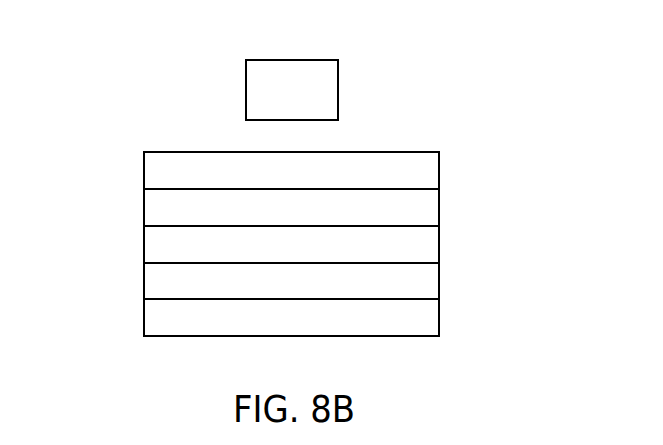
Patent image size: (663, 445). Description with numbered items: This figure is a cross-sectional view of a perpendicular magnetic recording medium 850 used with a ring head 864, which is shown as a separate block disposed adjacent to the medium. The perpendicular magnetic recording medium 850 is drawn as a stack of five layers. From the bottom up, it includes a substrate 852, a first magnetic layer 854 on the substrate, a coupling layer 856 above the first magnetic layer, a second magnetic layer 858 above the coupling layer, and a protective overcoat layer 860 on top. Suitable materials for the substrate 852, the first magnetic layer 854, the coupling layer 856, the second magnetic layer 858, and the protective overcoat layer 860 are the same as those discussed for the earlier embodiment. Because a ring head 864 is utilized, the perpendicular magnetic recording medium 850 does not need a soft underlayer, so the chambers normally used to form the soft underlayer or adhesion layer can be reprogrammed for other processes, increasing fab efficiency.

The perpendicular magnetic recording medium 850 is at (141, 96).
The ring head 864 is at (311, 101).
The protective overcoat layer 860 is at (311, 183).
The second magnetic layer 858 is at (311, 220).
The coupling layer 856 is at (311, 257).
The first magnetic layer 854 is at (311, 293).
The substrate 852 is at (311, 330).